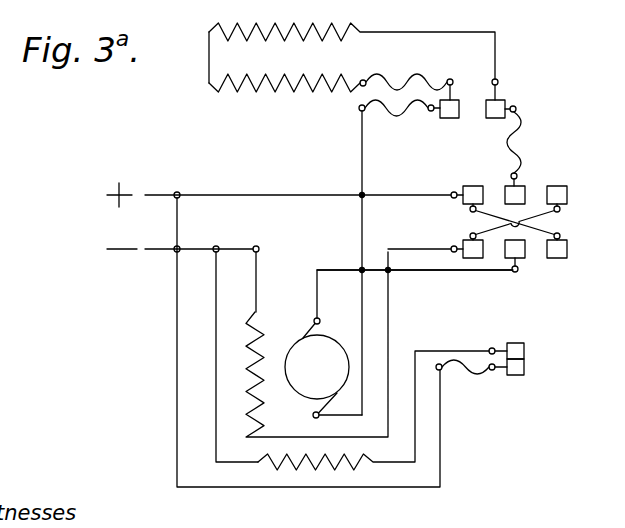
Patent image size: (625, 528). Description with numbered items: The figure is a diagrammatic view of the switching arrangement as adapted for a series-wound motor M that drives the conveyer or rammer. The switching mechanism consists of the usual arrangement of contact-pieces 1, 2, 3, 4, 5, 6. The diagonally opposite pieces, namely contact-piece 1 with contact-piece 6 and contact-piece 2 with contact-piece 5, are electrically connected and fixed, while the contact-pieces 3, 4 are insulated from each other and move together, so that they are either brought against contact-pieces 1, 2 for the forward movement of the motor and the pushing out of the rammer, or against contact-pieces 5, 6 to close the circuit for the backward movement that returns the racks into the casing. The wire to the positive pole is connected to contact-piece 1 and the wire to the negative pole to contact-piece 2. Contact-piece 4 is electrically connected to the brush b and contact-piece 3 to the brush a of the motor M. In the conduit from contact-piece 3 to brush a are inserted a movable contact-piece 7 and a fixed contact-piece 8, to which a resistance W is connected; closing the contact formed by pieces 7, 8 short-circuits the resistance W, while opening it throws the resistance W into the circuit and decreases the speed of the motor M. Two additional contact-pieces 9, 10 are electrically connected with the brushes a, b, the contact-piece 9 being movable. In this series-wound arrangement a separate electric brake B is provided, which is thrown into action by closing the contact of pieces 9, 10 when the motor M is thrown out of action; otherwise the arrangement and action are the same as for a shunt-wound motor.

The contact-piece 1 is at (482, 178).
The contact-piece 2 is at (474, 258).
The contact-piece 3 is at (519, 190).
The contact-piece 4 is at (521, 258).
The contact-piece 5 is at (556, 190).
The contact-piece 6 is at (558, 258).
The movable contact-piece 7 is at (446, 118).
The fixed contact-piece 8 is at (490, 118).
The contact-piece 9 is at (515, 375).
The contact-piece 10 is at (519, 351).
The resistance W is at (255, 74).
The electric brake B is at (373, 422).
The motor M is at (317, 367).
The brush a is at (337, 405).
The brush b is at (402, 304).